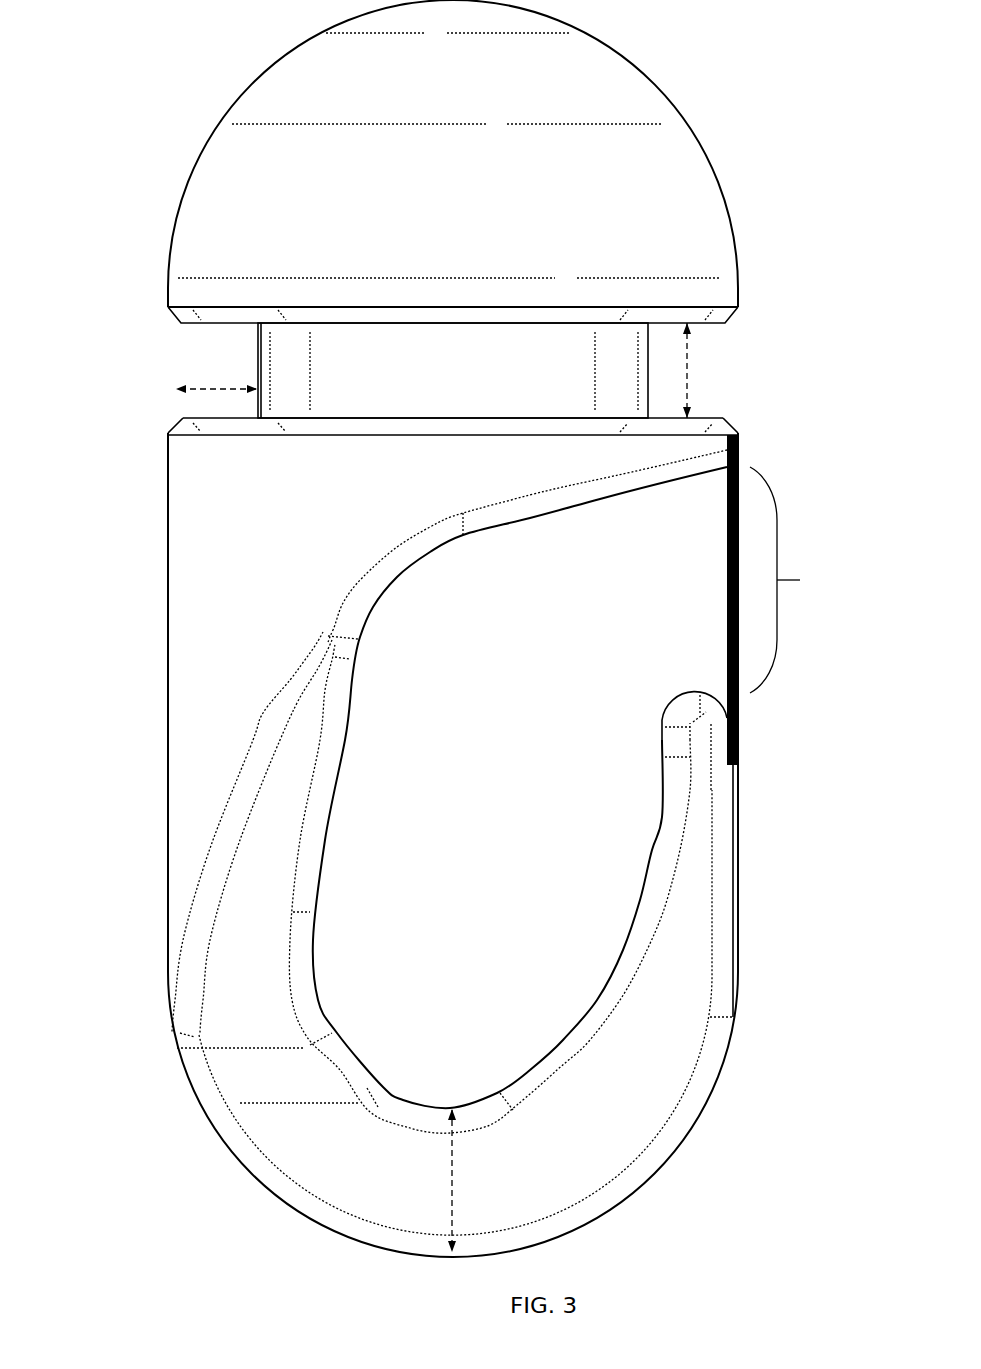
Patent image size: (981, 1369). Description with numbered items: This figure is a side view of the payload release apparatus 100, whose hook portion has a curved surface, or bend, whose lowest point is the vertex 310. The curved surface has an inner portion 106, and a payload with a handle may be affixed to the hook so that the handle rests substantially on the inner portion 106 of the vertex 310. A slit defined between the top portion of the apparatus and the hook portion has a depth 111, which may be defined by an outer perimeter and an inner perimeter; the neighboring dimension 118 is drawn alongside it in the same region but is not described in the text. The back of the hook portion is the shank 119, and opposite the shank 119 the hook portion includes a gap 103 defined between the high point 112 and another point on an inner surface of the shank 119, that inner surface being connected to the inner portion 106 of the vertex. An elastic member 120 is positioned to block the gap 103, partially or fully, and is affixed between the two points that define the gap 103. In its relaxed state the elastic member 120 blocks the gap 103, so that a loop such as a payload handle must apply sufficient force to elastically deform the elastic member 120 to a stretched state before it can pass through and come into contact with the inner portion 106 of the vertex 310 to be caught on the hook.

The payload release apparatus 100 is at (802, 152).
The depth 111 is at (212, 388).
The neck height 118 is at (687, 373).
The gap 103 is at (796, 580).
The elastic member 120 is at (728, 555).
The shank 119 is at (167, 783).
The high point 112 is at (676, 714).
The inner portion 106 is at (448, 1106).
The vertex 310 is at (452, 1180).